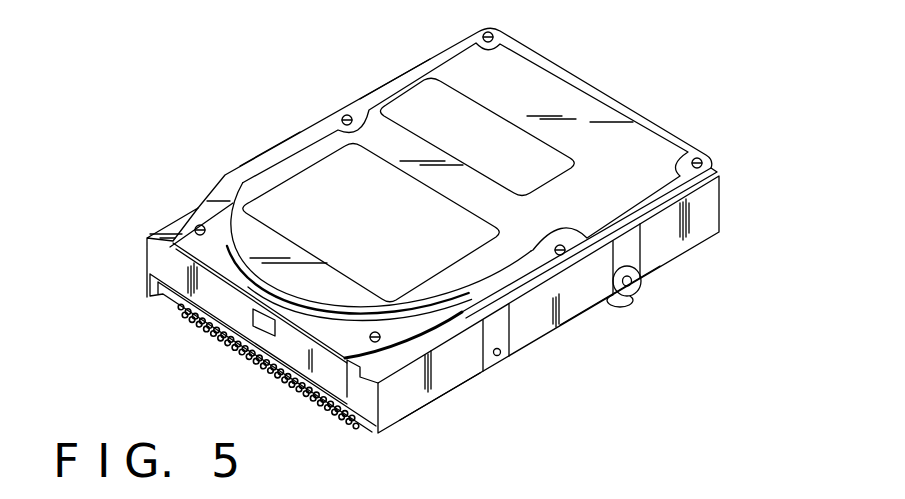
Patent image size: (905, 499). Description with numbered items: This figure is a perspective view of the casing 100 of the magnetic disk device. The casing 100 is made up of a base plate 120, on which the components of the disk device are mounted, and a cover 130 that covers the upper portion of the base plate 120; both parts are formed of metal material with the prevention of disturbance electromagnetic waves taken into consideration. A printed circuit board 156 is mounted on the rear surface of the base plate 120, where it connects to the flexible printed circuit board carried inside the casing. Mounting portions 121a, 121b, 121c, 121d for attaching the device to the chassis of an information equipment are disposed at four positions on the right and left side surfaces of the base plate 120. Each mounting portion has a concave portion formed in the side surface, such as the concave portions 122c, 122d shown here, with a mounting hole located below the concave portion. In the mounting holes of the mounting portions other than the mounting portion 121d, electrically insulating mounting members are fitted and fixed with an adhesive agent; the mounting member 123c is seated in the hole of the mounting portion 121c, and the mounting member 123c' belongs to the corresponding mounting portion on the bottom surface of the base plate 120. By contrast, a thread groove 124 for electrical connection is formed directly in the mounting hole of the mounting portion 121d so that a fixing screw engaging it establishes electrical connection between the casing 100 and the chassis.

The casing 100 is at (321, 108).
The base plate 120 is at (714, 213).
The mounting portion 121a is at (383, 75).
The mounting portion 121b is at (262, 148).
The mounting portion 121c is at (608, 321).
The mounting portion 121d is at (490, 381).
The concave portion 122c is at (627, 248).
The concave portion 122d is at (492, 332).
The mounting member 123c is at (663, 295).
The mounting member 123c' is at (652, 330).
The thread groove 124 is at (500, 365).
The cover 130 is at (580, 103).
The printed circuit board 156 is at (163, 298).